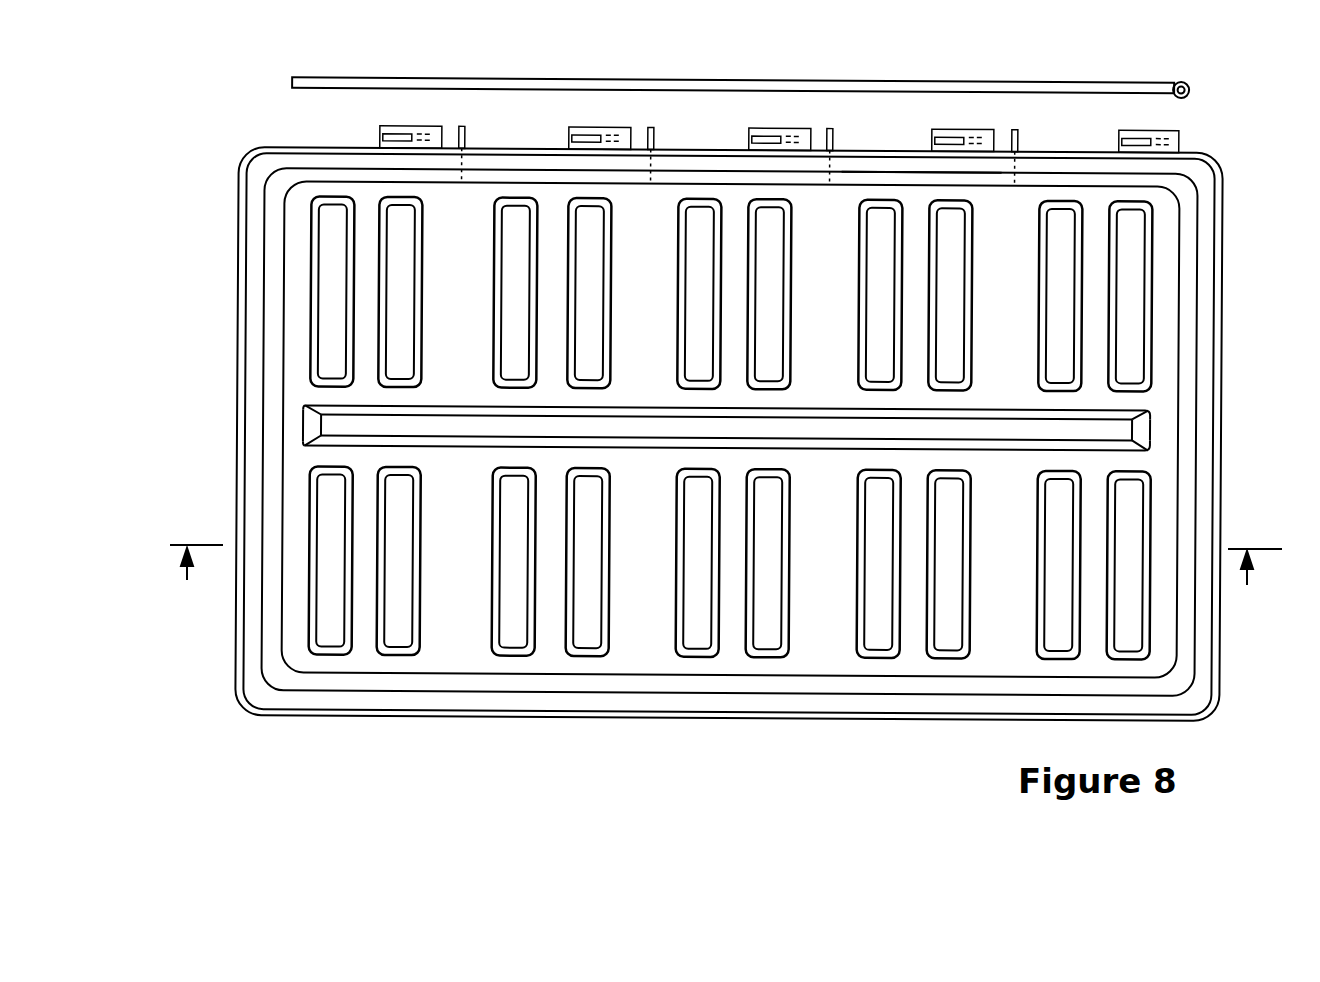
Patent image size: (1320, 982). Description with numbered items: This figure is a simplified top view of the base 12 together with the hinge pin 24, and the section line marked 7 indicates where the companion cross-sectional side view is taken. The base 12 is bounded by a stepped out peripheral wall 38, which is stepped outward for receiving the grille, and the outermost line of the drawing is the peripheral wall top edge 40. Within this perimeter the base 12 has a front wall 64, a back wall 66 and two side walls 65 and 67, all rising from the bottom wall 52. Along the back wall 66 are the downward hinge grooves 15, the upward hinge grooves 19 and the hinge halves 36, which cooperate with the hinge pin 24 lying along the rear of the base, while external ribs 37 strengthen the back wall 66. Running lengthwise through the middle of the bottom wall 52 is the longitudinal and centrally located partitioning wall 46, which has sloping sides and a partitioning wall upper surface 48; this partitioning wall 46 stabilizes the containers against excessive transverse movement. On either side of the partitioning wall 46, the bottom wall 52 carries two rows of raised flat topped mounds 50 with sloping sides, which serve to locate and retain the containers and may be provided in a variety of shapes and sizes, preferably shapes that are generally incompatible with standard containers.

The base 12 is at (1250, 287).
The peripheral wall top edge 40 is at (240, 164).
The stepped out peripheral wall 38 is at (240, 258).
The side wall 65 is at (275, 383).
The side wall 67 is at (1187, 447).
The partitioning wall 46 is at (472, 405).
The partitioning wall upper surface 48 is at (682, 428).
The front wall 64 is at (423, 445).
The raised flat topped mounds 50 is at (768, 602).
The bottom wall 52 is at (907, 610).
The upward hinge grooves 19 is at (349, 130).
The downward hinge grooves 15 is at (460, 128).
The hinge halves 36 is at (598, 126).
The external ribs 37 is at (650, 128).
The back wall 66 is at (867, 178).
The hinge pin 24 is at (1186, 83).
The section line 7- 7 is at (726, 582).